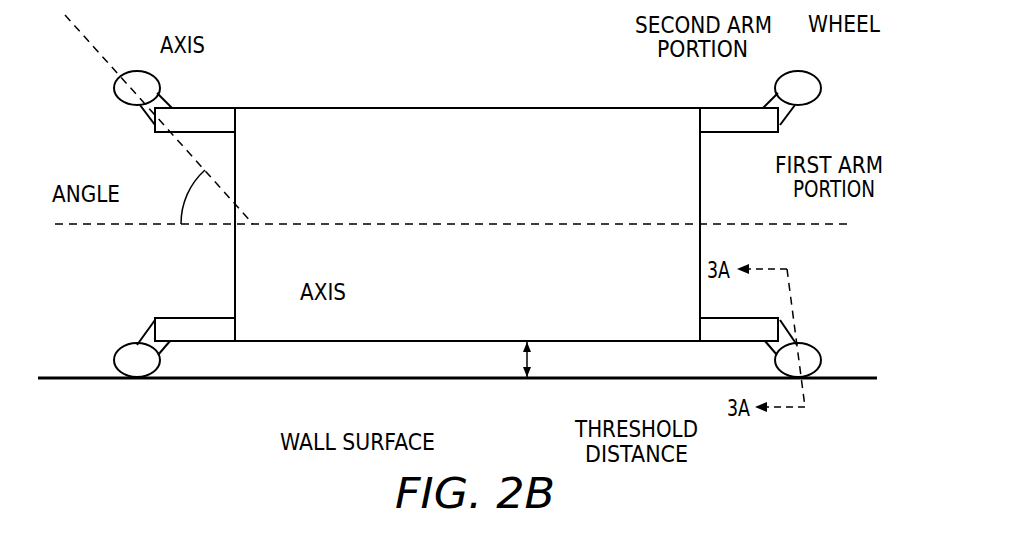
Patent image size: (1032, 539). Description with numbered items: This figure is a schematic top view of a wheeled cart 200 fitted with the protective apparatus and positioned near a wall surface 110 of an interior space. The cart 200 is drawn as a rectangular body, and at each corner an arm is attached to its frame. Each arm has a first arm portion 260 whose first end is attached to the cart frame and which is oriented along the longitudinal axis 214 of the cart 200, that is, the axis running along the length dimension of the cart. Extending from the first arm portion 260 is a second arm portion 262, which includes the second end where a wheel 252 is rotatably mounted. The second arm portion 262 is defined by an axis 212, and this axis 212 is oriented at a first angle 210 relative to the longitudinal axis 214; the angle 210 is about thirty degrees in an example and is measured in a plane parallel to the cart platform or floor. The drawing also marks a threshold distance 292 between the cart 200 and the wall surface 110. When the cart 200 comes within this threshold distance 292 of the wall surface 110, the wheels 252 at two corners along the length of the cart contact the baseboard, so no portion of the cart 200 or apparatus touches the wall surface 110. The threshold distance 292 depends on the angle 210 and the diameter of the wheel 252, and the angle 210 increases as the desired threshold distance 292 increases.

The wheeled cart 200 is at (512, 207).
The wall surface 110 is at (345, 380).
The axis 212 is at (93, 44).
The longitudinal axis 214 is at (325, 226).
The first angle 210 is at (182, 195).
The wheel 252 is at (808, 72).
The first arm portion 260 is at (748, 133).
The second arm portion 262 is at (768, 102).
The threshold distance 292 is at (531, 360).